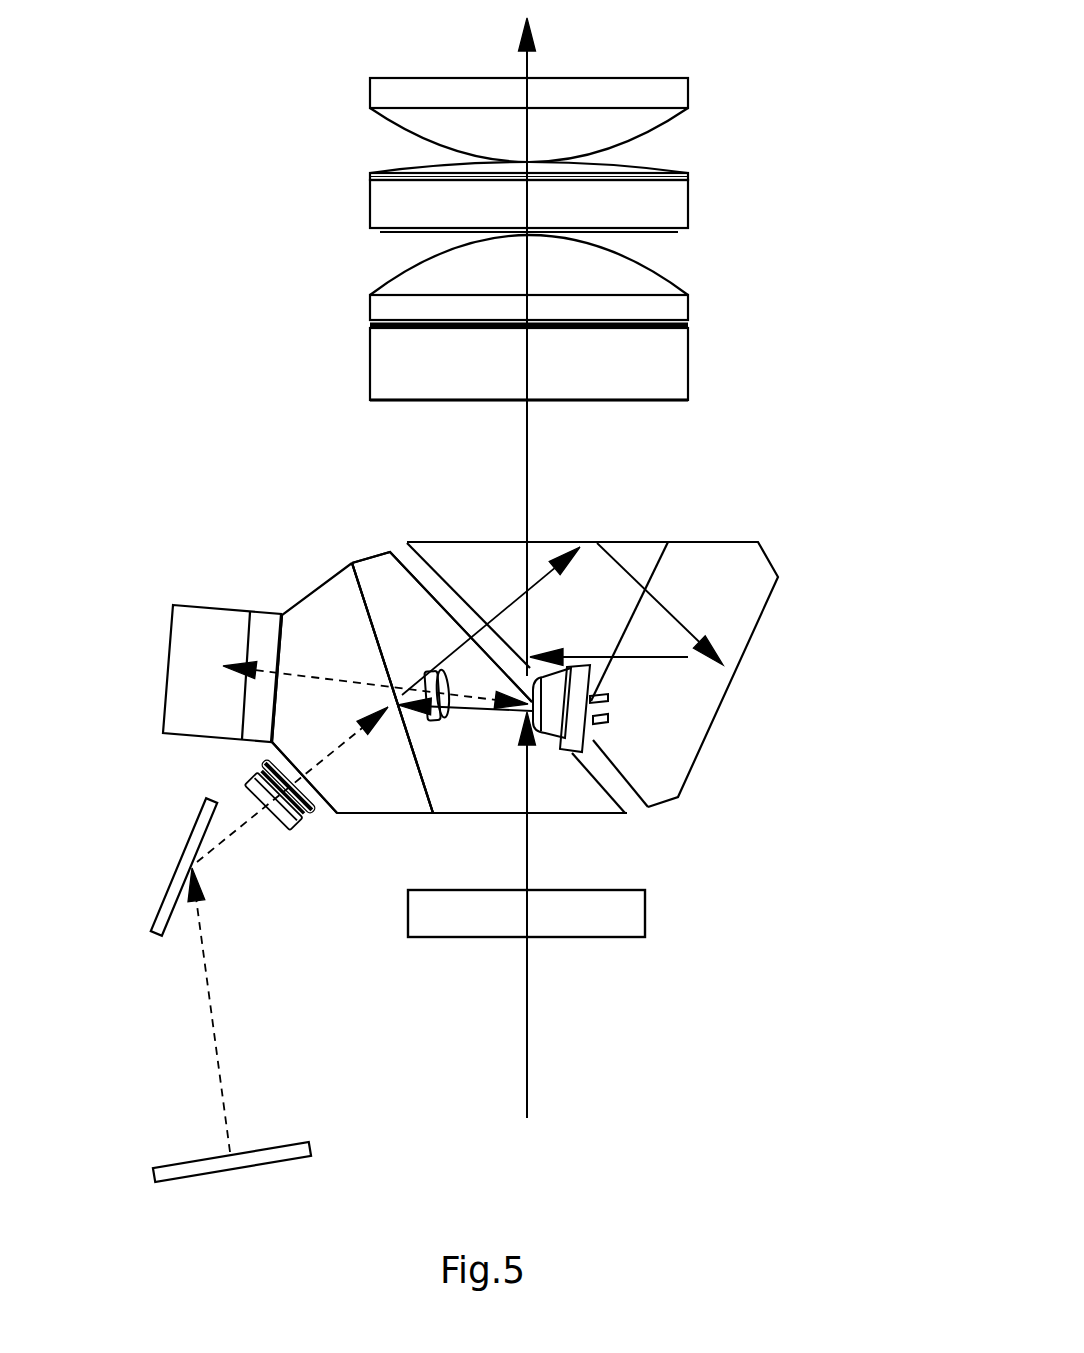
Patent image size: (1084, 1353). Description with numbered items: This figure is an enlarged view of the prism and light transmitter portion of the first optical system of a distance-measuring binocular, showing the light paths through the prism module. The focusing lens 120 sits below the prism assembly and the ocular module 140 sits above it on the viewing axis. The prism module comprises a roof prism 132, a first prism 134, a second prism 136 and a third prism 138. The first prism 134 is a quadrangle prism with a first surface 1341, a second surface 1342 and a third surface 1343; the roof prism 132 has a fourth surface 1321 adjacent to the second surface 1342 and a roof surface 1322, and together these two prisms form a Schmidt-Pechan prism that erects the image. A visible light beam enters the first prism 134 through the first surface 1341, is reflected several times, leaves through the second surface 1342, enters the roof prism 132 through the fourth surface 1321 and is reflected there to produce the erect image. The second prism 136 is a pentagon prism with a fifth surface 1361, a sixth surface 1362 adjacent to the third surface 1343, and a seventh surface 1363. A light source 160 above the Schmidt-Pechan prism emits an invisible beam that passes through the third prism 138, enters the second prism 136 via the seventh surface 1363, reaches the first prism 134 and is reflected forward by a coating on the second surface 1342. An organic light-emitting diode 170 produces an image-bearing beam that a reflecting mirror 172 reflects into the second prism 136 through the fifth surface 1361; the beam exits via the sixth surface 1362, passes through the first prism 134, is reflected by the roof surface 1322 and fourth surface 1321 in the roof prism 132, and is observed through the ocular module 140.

The focusing lens 120 is at (582, 917).
The roof prism 132 is at (707, 597).
The fourth surface 1321 is at (405, 550).
The roof surface 1322 is at (733, 683).
The first prism 134 is at (377, 580).
The first surface 1341 is at (585, 815).
The second surface 1342 is at (405, 565).
The third surface 1343 is at (425, 765).
The second prism 136 is at (317, 627).
The fifth surface 1361 is at (330, 812).
The sixth surface 1362 is at (363, 600).
The seventh surface 1363 is at (277, 660).
The third prism 138 is at (217, 640).
The ocular module 140 is at (713, 195).
The light source 160 is at (556, 704).
The organic light-emitting diode 170 is at (272, 1163).
The reflecting mirror 172 is at (163, 935).